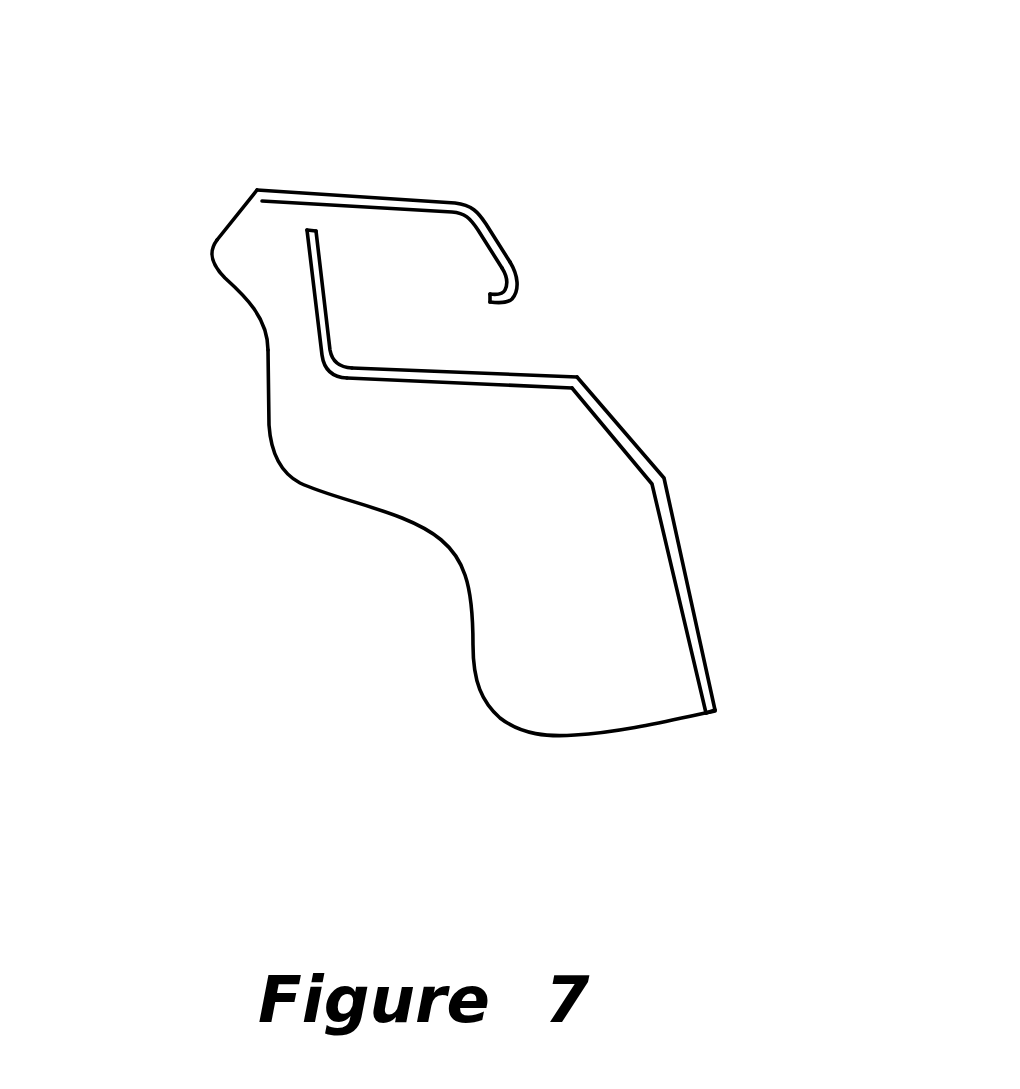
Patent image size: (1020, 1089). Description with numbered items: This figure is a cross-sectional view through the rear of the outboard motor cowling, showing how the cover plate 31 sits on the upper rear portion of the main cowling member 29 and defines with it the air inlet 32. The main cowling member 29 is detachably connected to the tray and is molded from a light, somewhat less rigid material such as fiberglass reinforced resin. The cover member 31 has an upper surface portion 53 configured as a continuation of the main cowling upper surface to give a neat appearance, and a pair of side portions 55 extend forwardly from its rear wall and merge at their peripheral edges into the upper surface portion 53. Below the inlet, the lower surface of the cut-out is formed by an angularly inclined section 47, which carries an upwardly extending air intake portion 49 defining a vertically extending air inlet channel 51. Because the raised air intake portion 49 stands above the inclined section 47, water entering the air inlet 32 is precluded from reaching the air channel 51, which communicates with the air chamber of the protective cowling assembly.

The main cowling member 29 is at (680, 547).
The cover plate 31 is at (278, 172).
The air inlet 32 is at (533, 335).
The angularly inclined section 47 is at (417, 373).
The air intake portion 49 is at (333, 318).
The air inlet channel 51 is at (283, 303).
The upper surface portion 53 is at (383, 198).
The side portion 55 is at (510, 257).